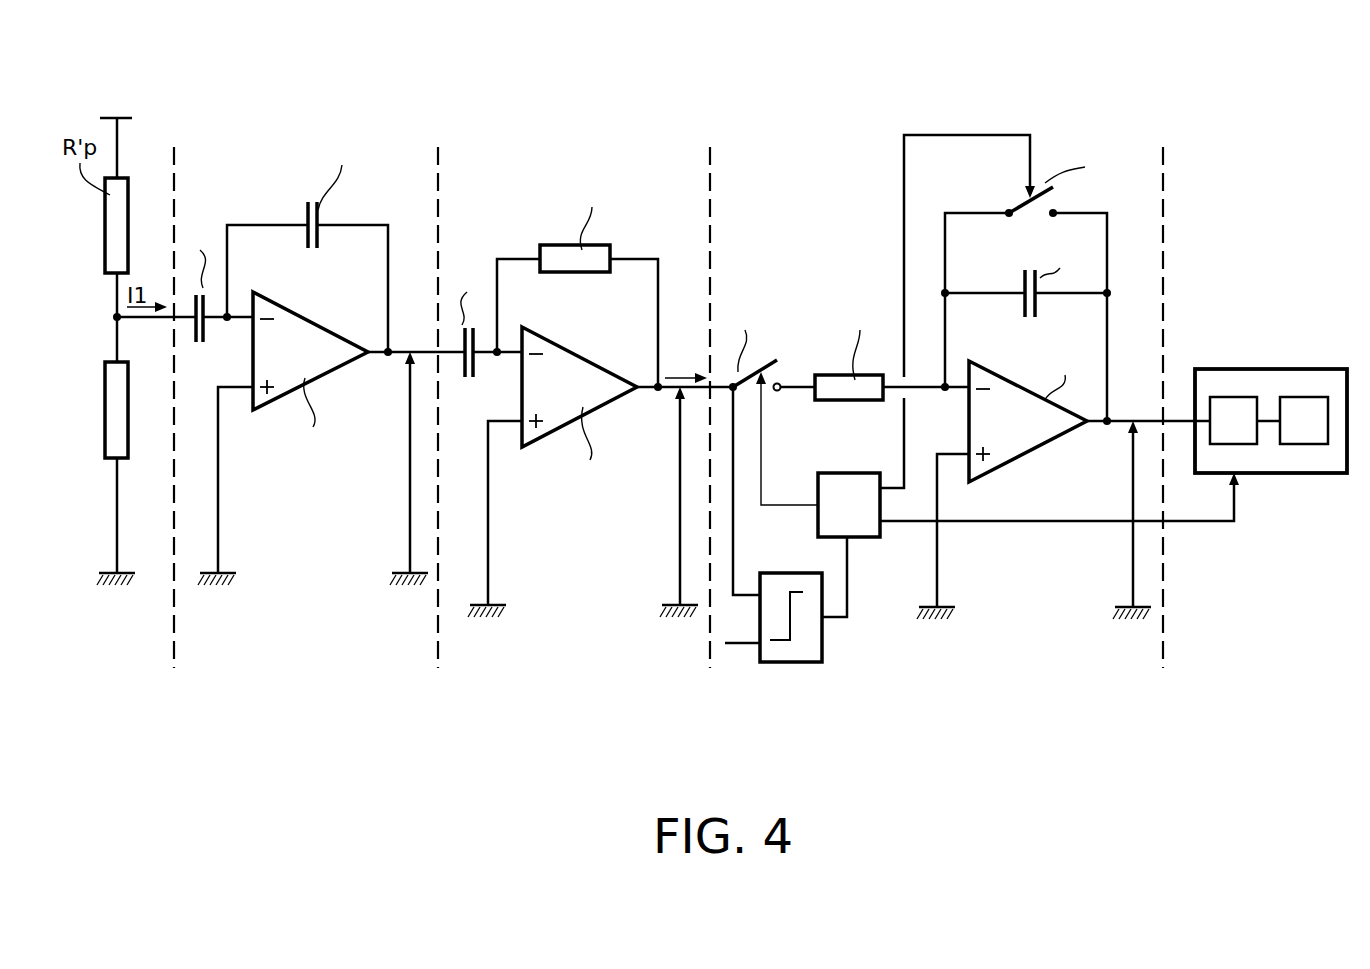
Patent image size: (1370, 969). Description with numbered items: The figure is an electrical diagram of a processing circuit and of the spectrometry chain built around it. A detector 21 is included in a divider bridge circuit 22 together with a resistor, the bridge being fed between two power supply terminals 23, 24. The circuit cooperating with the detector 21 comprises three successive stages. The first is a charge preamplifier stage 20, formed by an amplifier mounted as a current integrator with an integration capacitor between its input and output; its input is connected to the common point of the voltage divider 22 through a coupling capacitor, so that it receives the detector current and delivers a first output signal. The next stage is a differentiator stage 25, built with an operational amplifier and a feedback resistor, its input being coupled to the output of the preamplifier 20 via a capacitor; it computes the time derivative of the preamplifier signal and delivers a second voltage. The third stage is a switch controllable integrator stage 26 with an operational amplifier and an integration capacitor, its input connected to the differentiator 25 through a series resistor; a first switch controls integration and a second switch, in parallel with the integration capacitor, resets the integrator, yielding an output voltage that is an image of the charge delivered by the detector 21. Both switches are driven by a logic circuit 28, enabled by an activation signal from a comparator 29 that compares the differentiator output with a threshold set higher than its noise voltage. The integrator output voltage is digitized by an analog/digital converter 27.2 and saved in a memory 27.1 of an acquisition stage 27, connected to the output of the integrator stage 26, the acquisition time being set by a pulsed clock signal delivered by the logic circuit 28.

The charge preamplifier stage 20 is at (428, 683).
The detector 21 is at (110, 446).
The divider bridge circuit 22 is at (100, 297).
The power supply terminal 23 is at (122, 115).
The power supply terminal 24 is at (110, 588).
The differentiator stage 25 is at (705, 683).
The switch controllable integrator stage 26 is at (977, 437).
The acquisition stage 27 is at (1264, 423).
The memory 27.1 is at (1302, 405).
The analog/digital converter 27.2 is at (1220, 410).
The logic circuit 28 is at (858, 493).
The comparator 29 is at (830, 624).